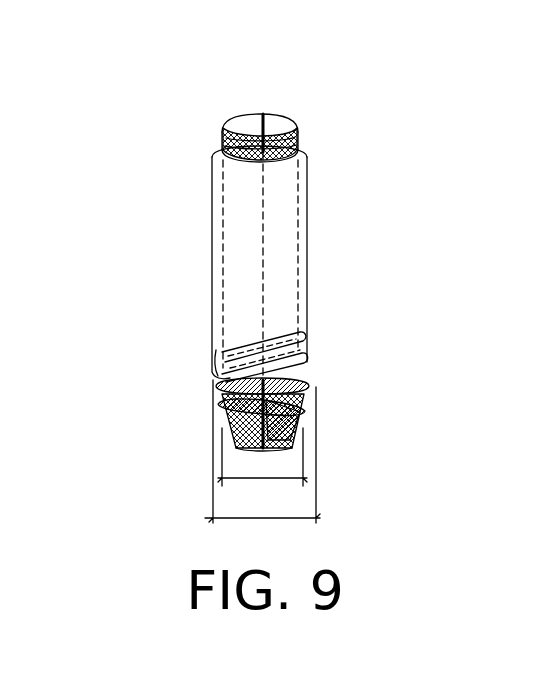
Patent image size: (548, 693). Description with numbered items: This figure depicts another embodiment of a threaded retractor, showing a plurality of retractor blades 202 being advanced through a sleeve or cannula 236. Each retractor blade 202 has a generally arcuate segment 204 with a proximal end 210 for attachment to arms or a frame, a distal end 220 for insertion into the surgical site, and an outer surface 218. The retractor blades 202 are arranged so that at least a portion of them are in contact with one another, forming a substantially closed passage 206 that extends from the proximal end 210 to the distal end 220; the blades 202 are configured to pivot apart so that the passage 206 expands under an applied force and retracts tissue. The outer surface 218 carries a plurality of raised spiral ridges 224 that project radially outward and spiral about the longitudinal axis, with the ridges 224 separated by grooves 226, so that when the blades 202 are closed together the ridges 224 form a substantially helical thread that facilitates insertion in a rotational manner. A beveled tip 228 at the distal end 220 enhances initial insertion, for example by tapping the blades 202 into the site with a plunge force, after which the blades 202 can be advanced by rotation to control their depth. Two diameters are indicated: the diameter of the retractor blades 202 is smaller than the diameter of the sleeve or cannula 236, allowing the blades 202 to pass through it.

The retractor blade 202 is at (133, 121).
The arcuate segment 204 is at (300, 139).
The passage 206 is at (257, 92).
The proximal end 210 is at (237, 122).
The outer surface 218 is at (237, 296).
The distal end 220 is at (226, 440).
The spiral ridge 224 is at (218, 383).
The groove 226 is at (226, 366).
The beveled tip 228 is at (298, 437).
The sleeve or cannula 236 is at (212, 223).